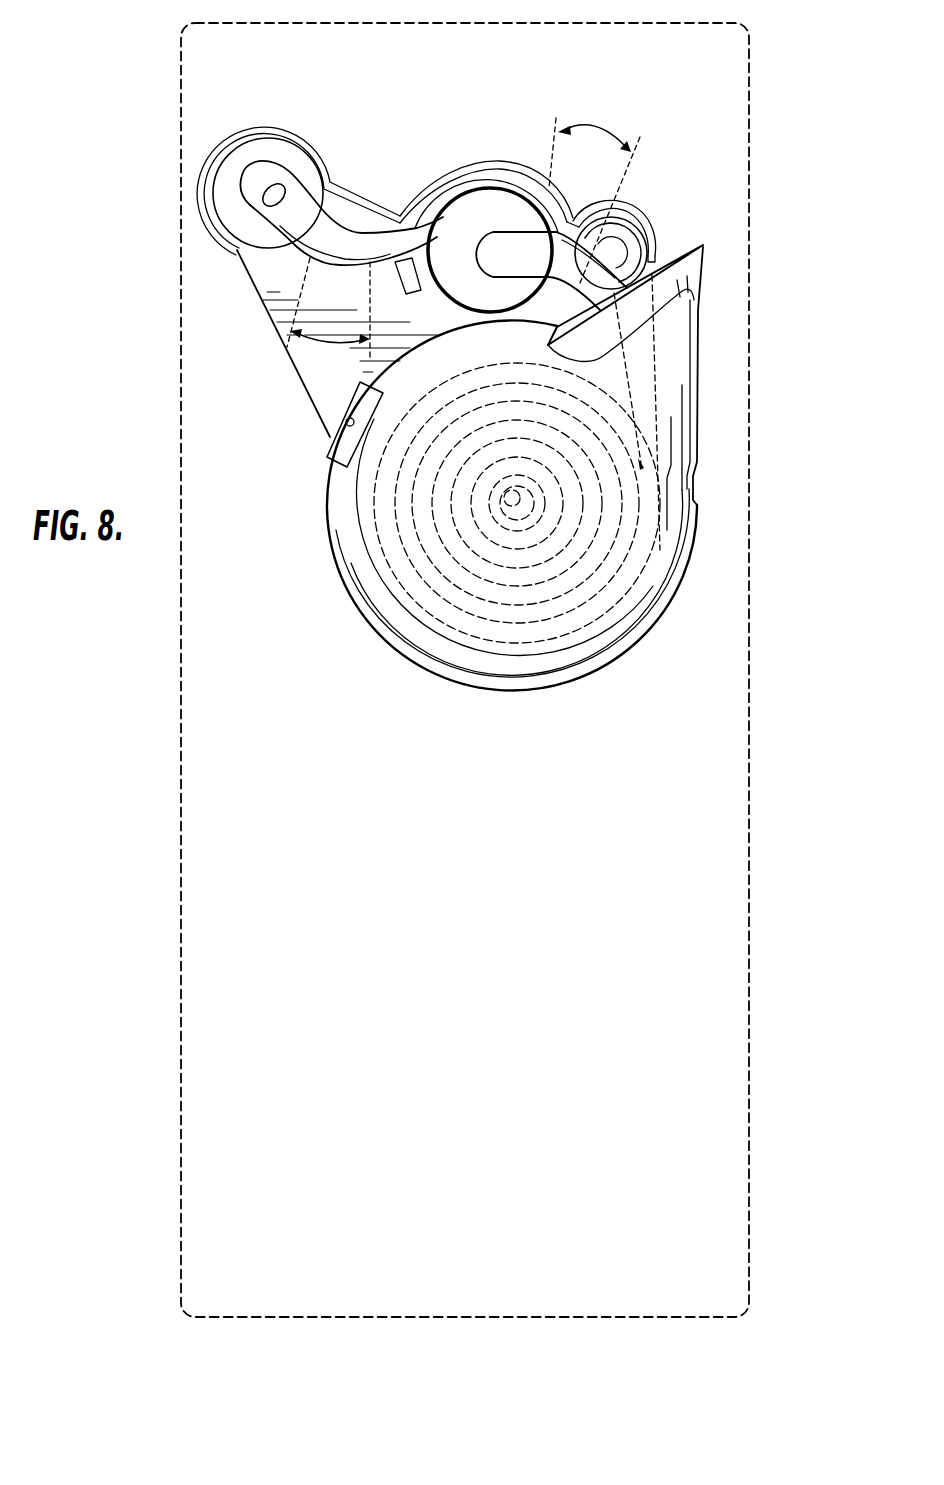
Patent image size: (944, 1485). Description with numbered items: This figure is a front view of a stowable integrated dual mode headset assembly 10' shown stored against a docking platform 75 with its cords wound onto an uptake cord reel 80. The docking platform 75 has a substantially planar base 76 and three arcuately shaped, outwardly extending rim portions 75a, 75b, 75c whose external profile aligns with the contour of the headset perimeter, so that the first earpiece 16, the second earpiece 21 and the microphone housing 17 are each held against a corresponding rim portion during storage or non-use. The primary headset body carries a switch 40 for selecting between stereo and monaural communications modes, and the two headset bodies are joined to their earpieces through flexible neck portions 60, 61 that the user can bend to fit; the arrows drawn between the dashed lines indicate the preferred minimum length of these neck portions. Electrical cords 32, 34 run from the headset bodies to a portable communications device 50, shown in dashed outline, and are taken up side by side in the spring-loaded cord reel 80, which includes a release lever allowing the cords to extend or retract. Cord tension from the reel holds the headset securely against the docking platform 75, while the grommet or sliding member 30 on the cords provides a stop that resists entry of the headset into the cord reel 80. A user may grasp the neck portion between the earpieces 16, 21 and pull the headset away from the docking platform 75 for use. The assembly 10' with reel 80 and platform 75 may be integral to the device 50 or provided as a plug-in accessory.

The stowable integrated dual mode headset assembly 10' is at (458, 670).
The first earpiece 16 is at (281, 153).
The microphone housing 17 is at (614, 239).
The earpiece 21 is at (500, 181).
The sliding member 30 is at (650, 248).
The electrical cord 32 is at (631, 405).
The electrical cord 34 is at (654, 388).
The switch 40 is at (275, 197).
The portable communications device 50 is at (752, 265).
The flexible neck portion 60 is at (350, 240).
The flexible neck portion 61 is at (592, 133).
The docking platform 75 is at (231, 249).
The rim portion 75a is at (250, 130).
The rim portion 75b is at (448, 170).
The rim portion 75c is at (648, 232).
The planar base 76 is at (263, 253).
The uptake cord reel 80 is at (383, 638).